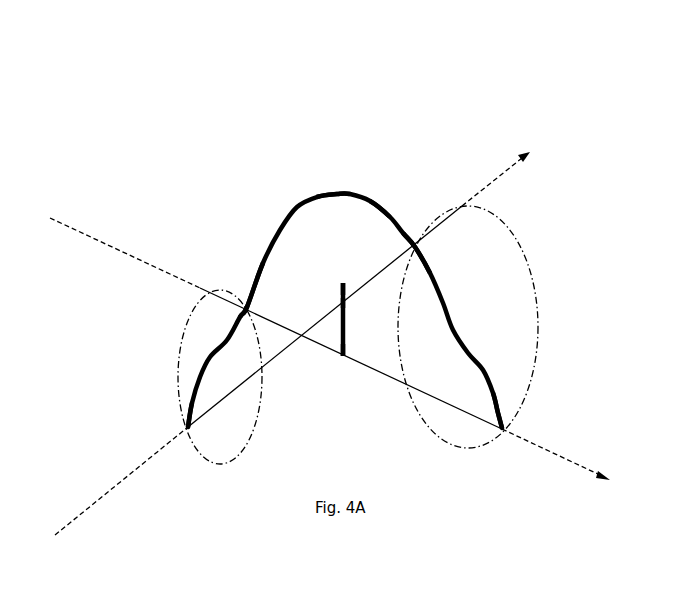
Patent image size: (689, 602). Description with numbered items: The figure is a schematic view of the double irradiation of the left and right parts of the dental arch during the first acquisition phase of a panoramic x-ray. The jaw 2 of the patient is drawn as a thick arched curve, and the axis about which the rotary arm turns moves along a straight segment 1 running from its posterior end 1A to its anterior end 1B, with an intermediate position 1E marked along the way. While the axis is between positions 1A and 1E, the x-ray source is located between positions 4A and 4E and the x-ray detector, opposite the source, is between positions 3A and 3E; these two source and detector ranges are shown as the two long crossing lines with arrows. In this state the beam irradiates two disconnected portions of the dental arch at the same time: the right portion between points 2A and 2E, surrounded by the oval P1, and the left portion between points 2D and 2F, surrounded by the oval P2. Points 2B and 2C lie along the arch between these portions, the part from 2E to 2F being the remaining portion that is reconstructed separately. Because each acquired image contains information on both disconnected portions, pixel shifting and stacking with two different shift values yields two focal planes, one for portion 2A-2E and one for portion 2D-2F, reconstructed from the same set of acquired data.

The straight segment 1 is at (352, 329).
The posterior end of axis trajectory 1A is at (343, 364).
The anterior end of axis trajectory 1B is at (343, 281).
The intermediate axis position 1E is at (338, 303).
The jaw 2 is at (272, 225).
The dental arch point 2A is at (504, 426).
The dental arch point 2B is at (389, 204).
The dental arch point 2C is at (316, 201).
The dental arch point 2D is at (172, 418).
The dental arch point 2E is at (406, 253).
The dental arch point 2F is at (258, 290).
The detector position 3A is at (420, 395).
The detector position 3E is at (377, 285).
The source position 4A is at (113, 246).
The source position 4E is at (110, 498).
The oval P1 is at (538, 325).
The oval P2 is at (178, 372).